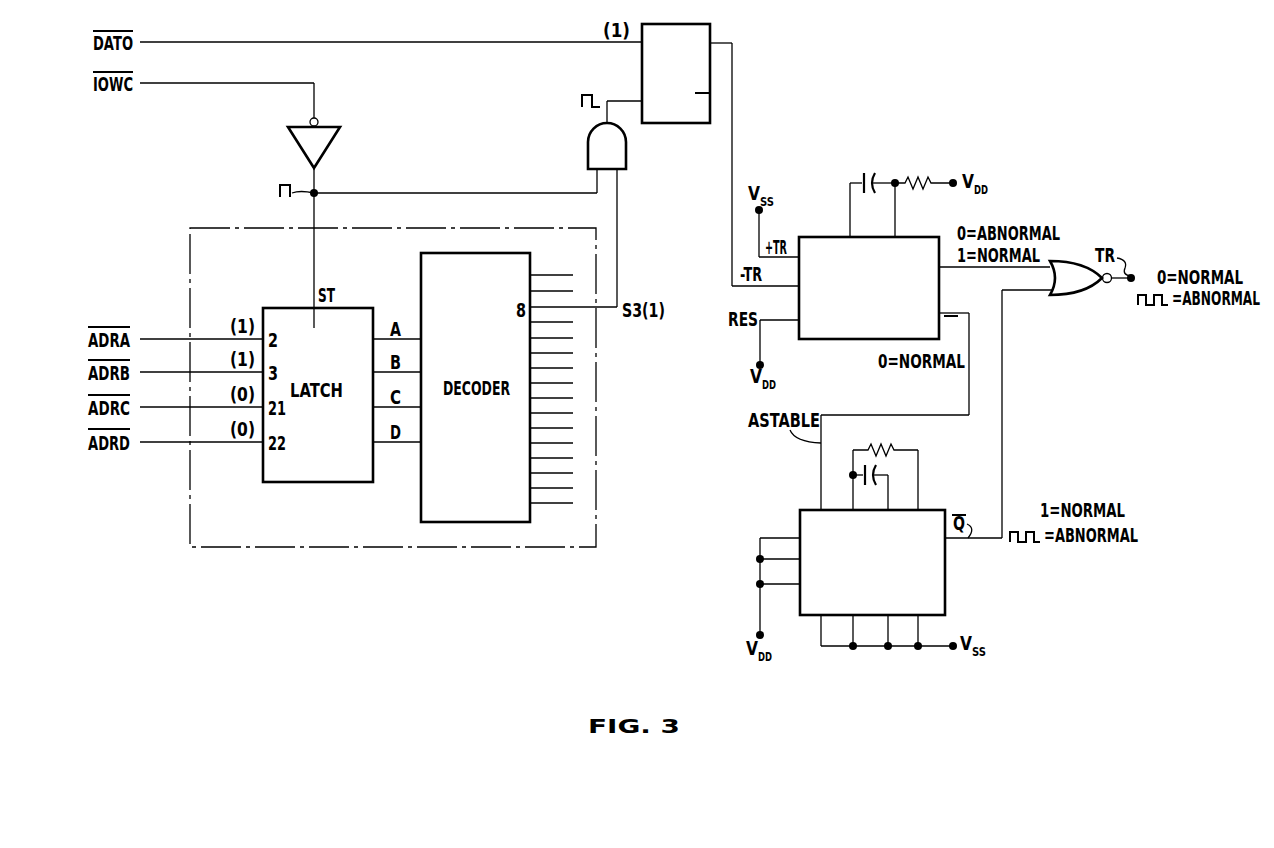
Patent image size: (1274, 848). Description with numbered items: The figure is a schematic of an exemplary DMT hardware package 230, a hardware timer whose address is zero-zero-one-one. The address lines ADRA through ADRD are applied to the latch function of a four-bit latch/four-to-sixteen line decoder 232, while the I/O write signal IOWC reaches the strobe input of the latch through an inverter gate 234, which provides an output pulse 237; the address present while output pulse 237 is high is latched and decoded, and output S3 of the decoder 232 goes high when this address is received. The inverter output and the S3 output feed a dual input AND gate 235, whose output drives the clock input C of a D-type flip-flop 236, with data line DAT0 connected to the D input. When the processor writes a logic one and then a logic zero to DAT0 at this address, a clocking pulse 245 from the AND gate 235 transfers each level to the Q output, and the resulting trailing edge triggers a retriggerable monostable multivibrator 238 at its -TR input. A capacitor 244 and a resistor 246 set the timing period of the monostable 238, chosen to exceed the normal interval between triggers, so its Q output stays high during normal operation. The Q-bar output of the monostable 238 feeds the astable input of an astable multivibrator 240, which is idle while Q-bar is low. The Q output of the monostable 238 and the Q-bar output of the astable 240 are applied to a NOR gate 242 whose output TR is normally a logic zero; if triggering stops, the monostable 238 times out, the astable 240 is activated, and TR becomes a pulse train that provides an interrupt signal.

The DMT hardware package 230 is at (785, 53).
The 4-bit latch/4-to-16 line decoder 232 is at (248, 547).
The inverter gate 234 is at (332, 150).
The dual input AND gate 235 is at (588, 152).
The D-type flip-flop 236 is at (700, 25).
The output pulse 237 is at (280, 186).
The retriggerable monostable multivibrator 238 is at (820, 339).
The astable multivibrator 240 is at (800, 514).
The NOR gate 242 is at (1060, 296).
The capacitor 244 is at (866, 172).
The clocking pulse 245 is at (582, 99).
The resistor 246 is at (910, 176).